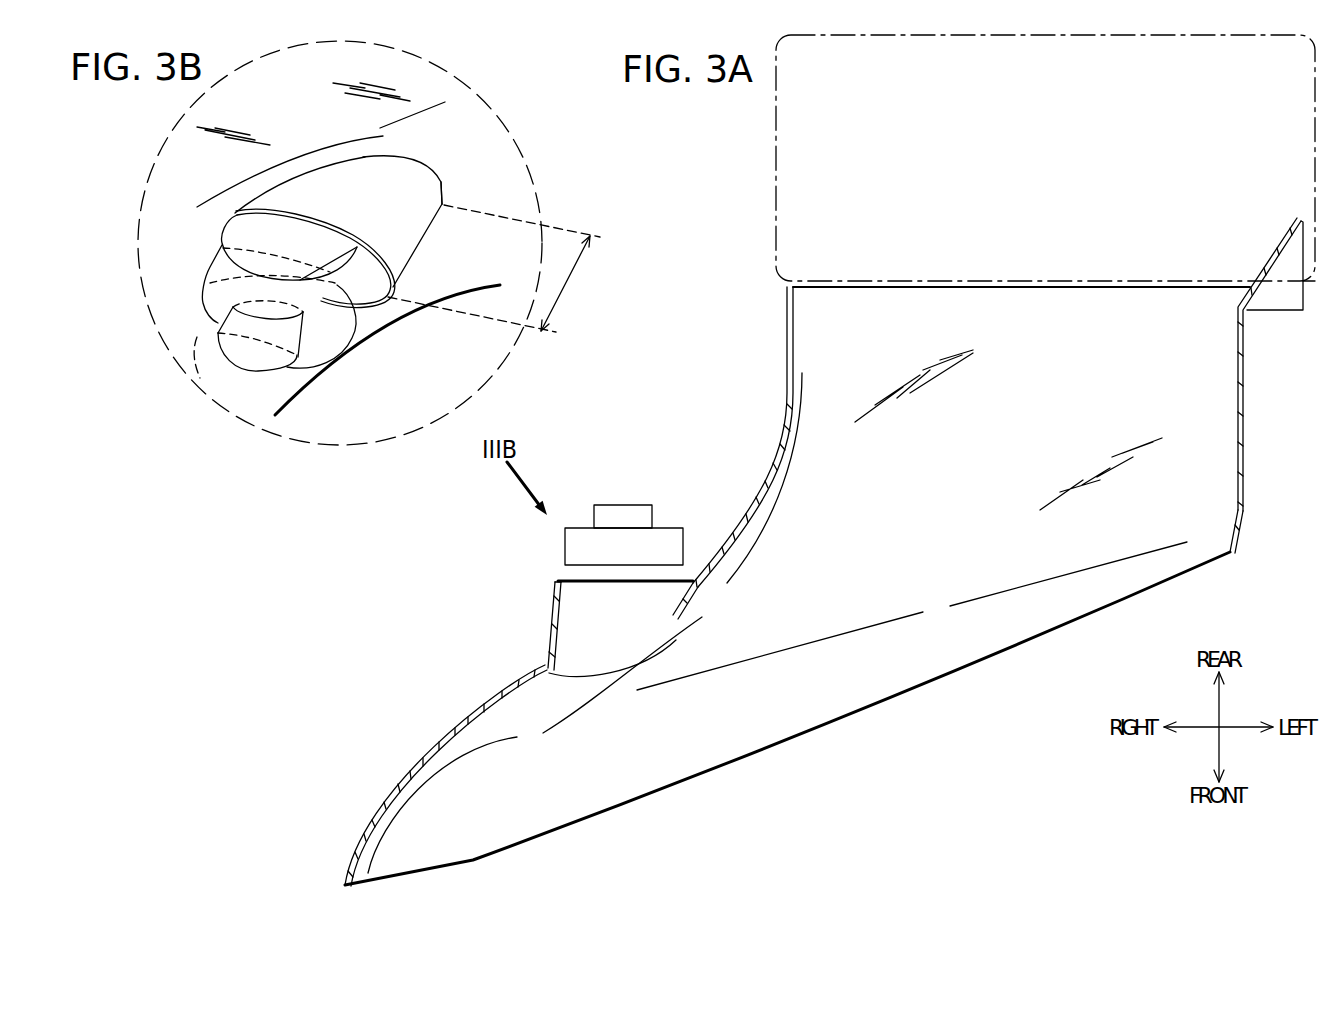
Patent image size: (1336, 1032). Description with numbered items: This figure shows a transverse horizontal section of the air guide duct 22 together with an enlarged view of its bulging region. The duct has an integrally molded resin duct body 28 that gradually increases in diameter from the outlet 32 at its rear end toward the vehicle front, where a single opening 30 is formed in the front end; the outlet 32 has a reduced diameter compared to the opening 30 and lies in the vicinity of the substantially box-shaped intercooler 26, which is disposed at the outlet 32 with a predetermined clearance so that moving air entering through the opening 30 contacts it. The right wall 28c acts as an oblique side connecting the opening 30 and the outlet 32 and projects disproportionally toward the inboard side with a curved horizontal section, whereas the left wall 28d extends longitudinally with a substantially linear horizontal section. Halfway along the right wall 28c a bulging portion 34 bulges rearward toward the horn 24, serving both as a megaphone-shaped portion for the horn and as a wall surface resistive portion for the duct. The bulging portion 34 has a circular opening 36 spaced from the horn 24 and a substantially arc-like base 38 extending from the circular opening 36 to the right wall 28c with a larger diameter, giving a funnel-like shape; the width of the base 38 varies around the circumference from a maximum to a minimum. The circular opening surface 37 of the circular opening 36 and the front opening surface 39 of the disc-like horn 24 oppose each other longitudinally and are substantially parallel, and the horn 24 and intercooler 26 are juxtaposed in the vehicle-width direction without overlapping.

In FIG. 3A, the air guide duct 22 is at (837, 731).
In FIG. 3A, the horn 24 is at (668, 543).
In FIG. 3B, the horn 24 is at (200, 372).
In FIG. 3A, the intercooler 26 is at (768, 159).
In FIG. 3A, the duct body 28 is at (683, 784).
In FIG. 3A, the right wall 28c is at (782, 424).
In FIG. 3B, the right wall 28c is at (486, 183).
In FIG. 3A, the left wall 28d is at (1246, 425).
In FIG. 3A, the opening 30 is at (348, 887).
In FIG. 3A, the outlet 32 is at (789, 286).
In FIG. 3A, the bulging portion 34 is at (545, 618).
In FIG. 3B, the bulging portion 34 is at (422, 258).
In FIG. 3A, the circular opening 36 is at (557, 580).
In FIG. 3B, the circular opening 36 is at (380, 305).
In FIG. 3A, the circular opening surface 37 is at (597, 577).
In FIG. 3A, the base 38 is at (548, 632).
In FIG. 3B, the base 38 is at (406, 228).
In FIG. 3A, the front opening surface 39 is at (645, 573).